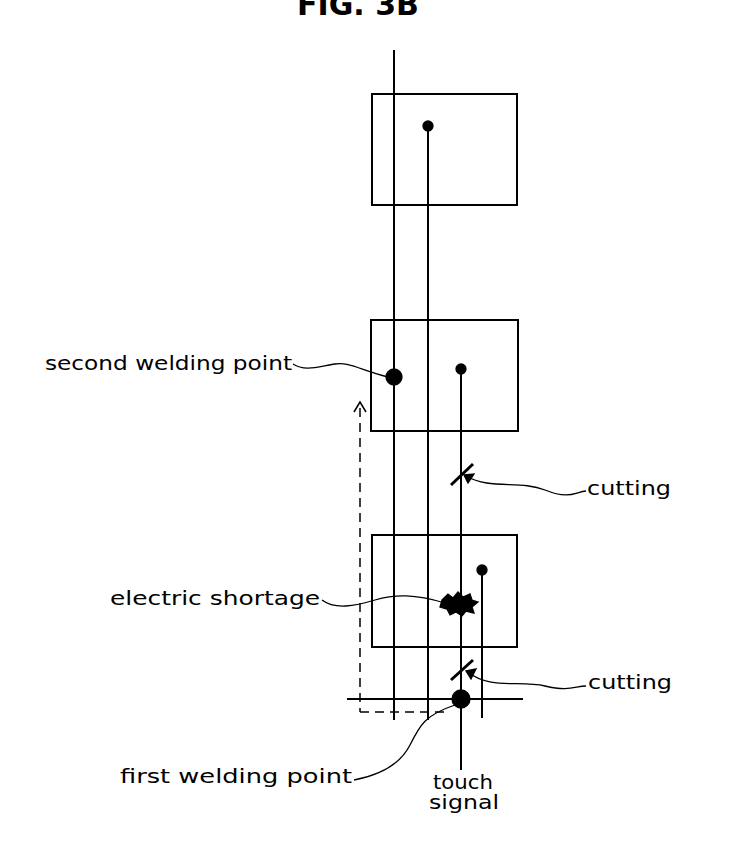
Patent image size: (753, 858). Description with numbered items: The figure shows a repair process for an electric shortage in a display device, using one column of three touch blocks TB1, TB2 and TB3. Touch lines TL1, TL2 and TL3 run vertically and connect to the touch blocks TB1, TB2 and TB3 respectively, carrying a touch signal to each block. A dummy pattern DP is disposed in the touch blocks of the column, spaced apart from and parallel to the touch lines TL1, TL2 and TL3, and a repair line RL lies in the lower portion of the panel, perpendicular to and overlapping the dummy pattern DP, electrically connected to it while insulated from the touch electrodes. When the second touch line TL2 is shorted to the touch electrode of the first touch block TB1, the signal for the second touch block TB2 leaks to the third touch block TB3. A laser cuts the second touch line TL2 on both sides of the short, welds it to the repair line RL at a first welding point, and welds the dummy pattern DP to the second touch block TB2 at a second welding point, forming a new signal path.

The first touch block TB1 is at (517, 152).
The second touch block TB2 is at (518, 378).
The third touch block TB3 is at (517, 595).
The first touch line TL1 is at (428, 253).
The second touch line TL2 is at (462, 443).
The third touch line TL3 is at (483, 658).
The dummy pattern DP is at (394, 256).
The repair line RL is at (523, 701).